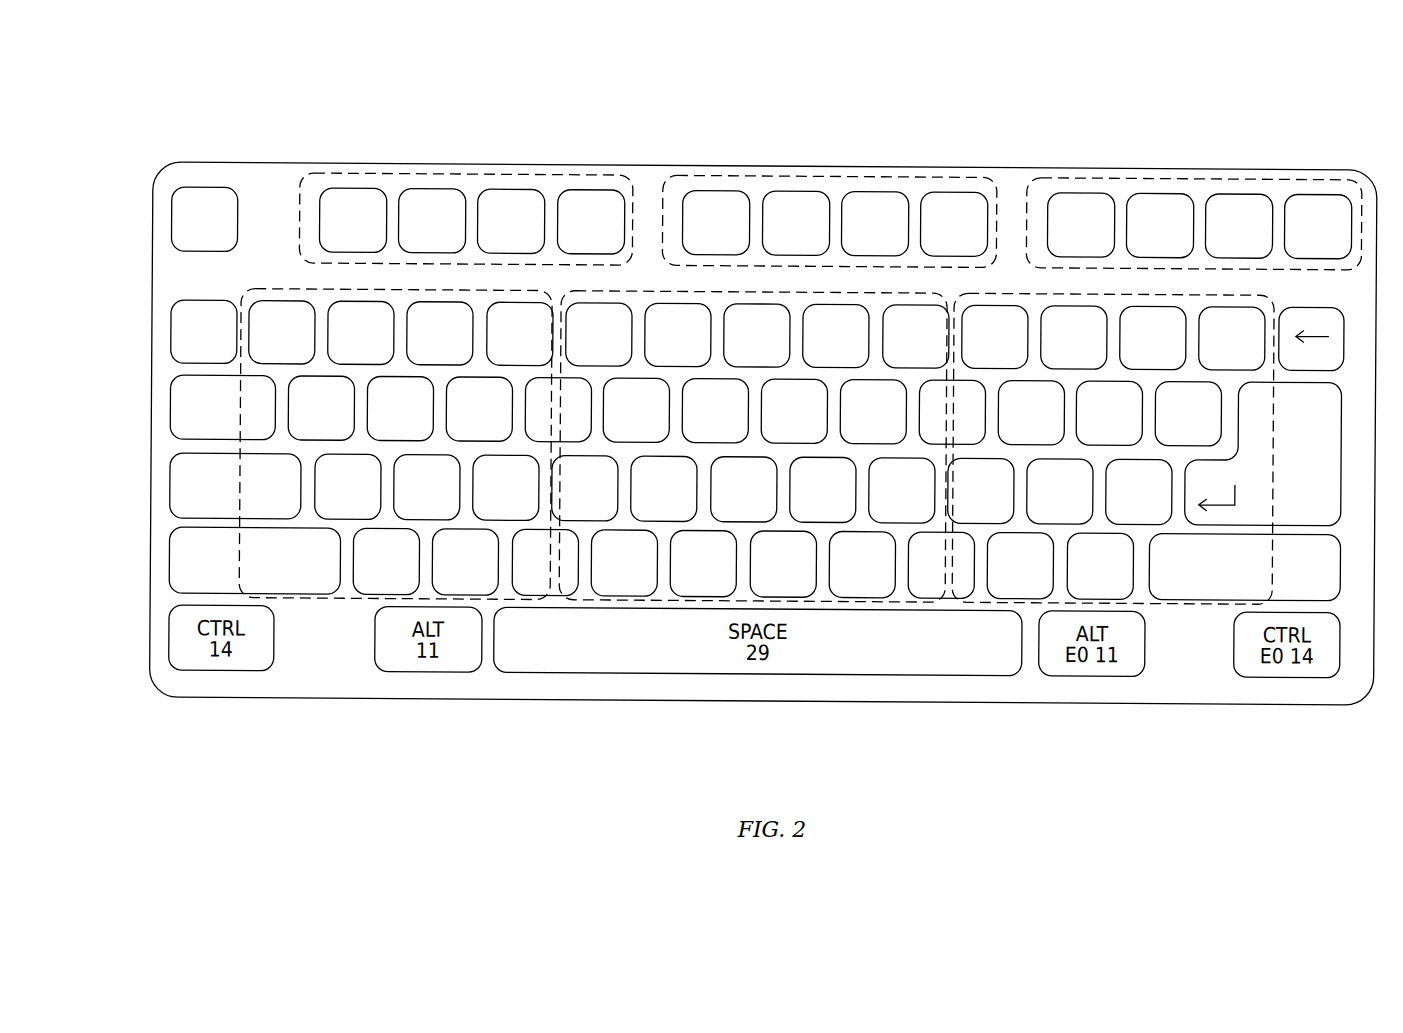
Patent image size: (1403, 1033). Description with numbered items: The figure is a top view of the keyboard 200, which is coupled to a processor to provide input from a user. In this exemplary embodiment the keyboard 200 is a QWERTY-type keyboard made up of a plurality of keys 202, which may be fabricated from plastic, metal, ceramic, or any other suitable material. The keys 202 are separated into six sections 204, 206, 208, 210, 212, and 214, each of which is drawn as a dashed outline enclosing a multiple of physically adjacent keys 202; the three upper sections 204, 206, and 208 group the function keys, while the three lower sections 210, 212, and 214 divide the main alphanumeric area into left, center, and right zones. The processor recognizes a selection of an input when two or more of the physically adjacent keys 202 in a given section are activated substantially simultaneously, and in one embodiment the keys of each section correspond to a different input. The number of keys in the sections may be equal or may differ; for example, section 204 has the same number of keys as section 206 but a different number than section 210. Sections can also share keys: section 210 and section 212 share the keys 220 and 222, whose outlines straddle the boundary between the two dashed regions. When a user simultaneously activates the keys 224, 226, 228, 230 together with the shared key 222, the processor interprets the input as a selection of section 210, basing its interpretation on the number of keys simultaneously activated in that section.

The keyboard 200 is at (530, 71).
The keys 202 is at (1291, 425).
The section 204 is at (463, 175).
The section 206 is at (826, 178).
The section 208 is at (1192, 181).
The section 210 is at (361, 518).
The section 212 is at (730, 520).
The section 214 is at (1187, 603).
The shared key 220 is at (544, 421).
The shared key 222 is at (532, 573).
The key 224 is at (465, 421).
The key 226 is at (492, 499).
The key 228 is at (413, 499).
The key 230 is at (452, 573).